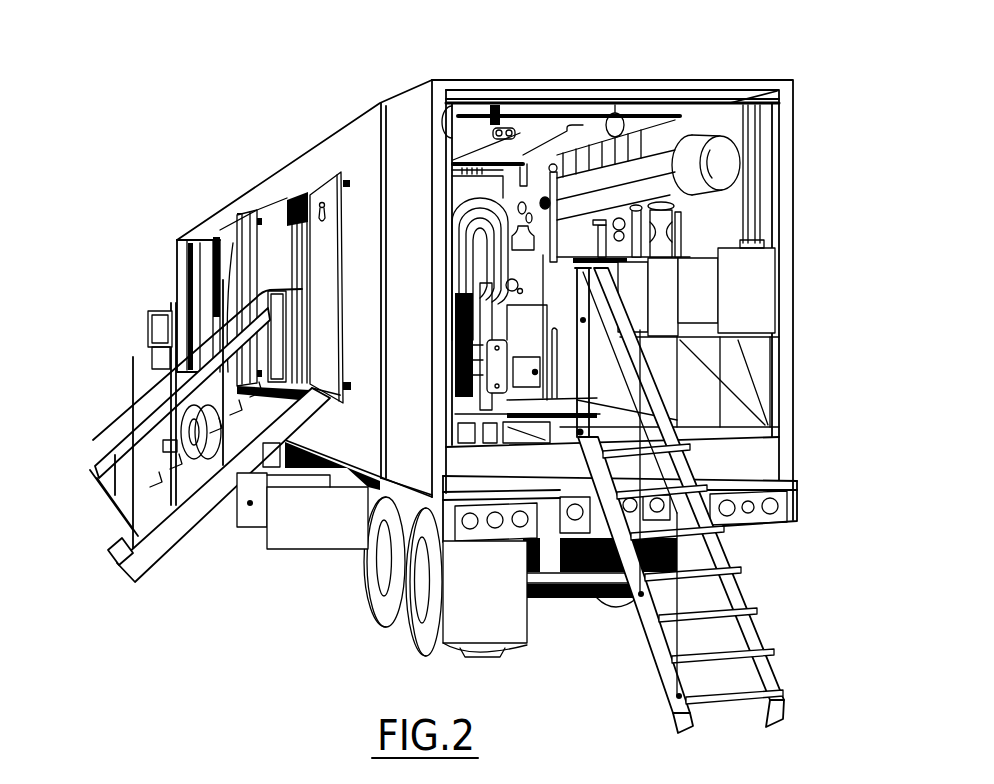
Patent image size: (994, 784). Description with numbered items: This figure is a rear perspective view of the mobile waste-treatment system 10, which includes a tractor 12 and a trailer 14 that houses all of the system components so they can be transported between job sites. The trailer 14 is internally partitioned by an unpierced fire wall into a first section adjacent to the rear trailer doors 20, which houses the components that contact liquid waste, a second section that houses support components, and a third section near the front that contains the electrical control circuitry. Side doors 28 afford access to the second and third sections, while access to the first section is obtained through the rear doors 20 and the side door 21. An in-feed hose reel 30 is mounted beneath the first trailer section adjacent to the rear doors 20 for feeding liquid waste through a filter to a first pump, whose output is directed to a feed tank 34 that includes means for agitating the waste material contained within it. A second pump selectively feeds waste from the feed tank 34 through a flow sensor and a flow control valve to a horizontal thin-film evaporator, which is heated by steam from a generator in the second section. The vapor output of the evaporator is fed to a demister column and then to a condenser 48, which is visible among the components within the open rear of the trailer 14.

The system 10 is at (198, 142).
The tractor 12 is at (162, 312).
The trailer 14 is at (272, 177).
The rear trailer doors 20 is at (396, 103).
The side door 21 is at (325, 170).
The side doors 28 is at (190, 250).
The in-feed hose reel 30 is at (252, 540).
The feed tank 34 is at (457, 186).
The condenser 48 is at (665, 168).